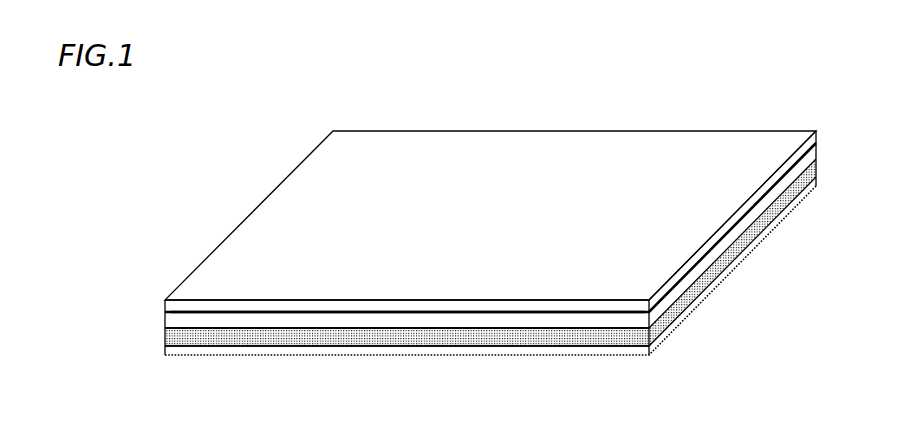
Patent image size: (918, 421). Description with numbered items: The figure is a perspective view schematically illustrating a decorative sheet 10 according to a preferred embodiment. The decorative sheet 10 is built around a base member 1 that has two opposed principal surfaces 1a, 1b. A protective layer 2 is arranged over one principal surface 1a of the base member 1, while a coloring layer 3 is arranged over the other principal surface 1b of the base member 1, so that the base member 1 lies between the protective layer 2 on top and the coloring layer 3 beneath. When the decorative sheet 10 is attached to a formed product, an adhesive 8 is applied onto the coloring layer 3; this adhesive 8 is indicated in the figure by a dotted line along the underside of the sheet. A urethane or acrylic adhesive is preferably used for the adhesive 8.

The decorative sheet 10 is at (686, 101).
The protective layer 2 is at (167, 300).
The base member 1 is at (167, 318).
The principal surface 1a is at (285, 313).
The principal surface 1b is at (355, 328).
The coloring layer 3 is at (165, 347).
The adhesive 8 is at (165, 352).